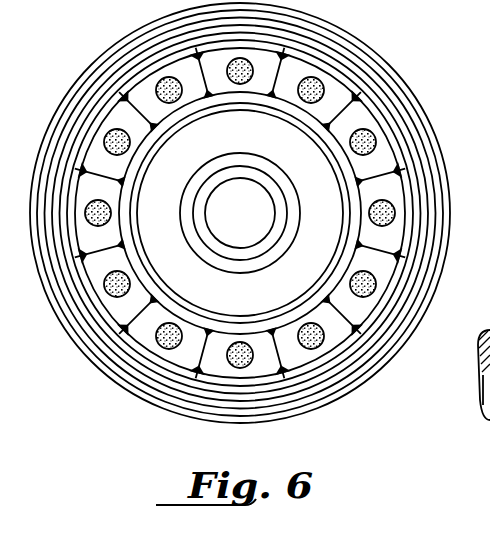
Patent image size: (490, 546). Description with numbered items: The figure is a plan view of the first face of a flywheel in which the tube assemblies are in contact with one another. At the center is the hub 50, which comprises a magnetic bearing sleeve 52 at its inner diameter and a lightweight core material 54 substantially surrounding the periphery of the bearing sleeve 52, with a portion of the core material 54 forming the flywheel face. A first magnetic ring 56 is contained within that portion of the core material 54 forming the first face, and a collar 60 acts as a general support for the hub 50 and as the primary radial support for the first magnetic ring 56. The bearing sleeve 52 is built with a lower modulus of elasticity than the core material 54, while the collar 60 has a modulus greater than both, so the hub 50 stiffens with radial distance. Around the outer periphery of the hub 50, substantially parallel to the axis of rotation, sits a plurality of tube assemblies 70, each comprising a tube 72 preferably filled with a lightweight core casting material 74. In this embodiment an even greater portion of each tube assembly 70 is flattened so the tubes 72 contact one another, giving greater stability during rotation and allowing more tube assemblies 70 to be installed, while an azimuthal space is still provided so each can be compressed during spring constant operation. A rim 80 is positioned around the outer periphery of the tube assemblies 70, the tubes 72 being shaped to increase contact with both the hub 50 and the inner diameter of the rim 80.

The hub 50 is at (118, 266).
The magnetic bearing sleeve 52 is at (203, 193).
The lightweight core material 54 is at (252, 265).
The first magnetic ring 56 is at (294, 153).
The collar 60 is at (305, 305).
The tube assembly 70 is at (147, 95).
The tube 72 is at (120, 313).
The lightweight core casting material 74 is at (161, 82).
The rim 80 is at (423, 158).